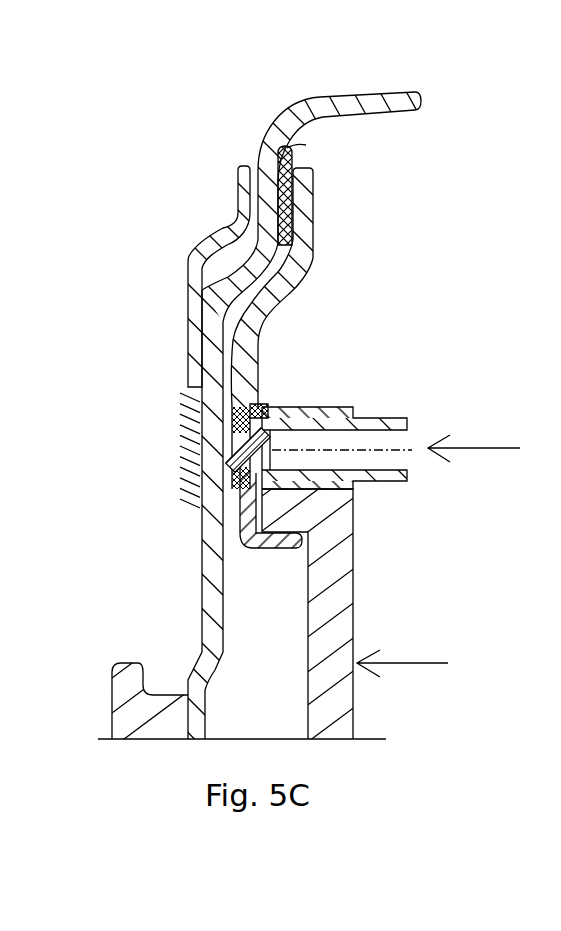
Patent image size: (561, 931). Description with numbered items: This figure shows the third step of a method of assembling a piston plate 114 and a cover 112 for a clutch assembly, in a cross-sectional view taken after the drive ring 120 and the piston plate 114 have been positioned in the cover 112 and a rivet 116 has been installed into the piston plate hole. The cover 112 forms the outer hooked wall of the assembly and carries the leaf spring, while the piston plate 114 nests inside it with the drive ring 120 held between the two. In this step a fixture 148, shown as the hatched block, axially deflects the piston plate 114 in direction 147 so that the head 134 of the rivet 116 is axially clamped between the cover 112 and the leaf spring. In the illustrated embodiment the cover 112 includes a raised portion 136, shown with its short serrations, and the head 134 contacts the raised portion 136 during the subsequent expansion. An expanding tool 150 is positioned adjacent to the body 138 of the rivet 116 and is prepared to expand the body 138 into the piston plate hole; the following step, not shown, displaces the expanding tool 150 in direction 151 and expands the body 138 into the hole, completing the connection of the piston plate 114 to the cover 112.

The cover 112 is at (345, 102).
The piston plate 114 is at (307, 234).
The rivet 116 is at (267, 406).
The drive ring 120 is at (294, 149).
The head 134 is at (240, 445).
The raised portion 136 is at (200, 388).
The body 138 is at (222, 490).
The direction 147 is at (407, 663).
The fixture 148 is at (348, 577).
The expanding tool 150 is at (378, 422).
The direction 151 is at (477, 448).